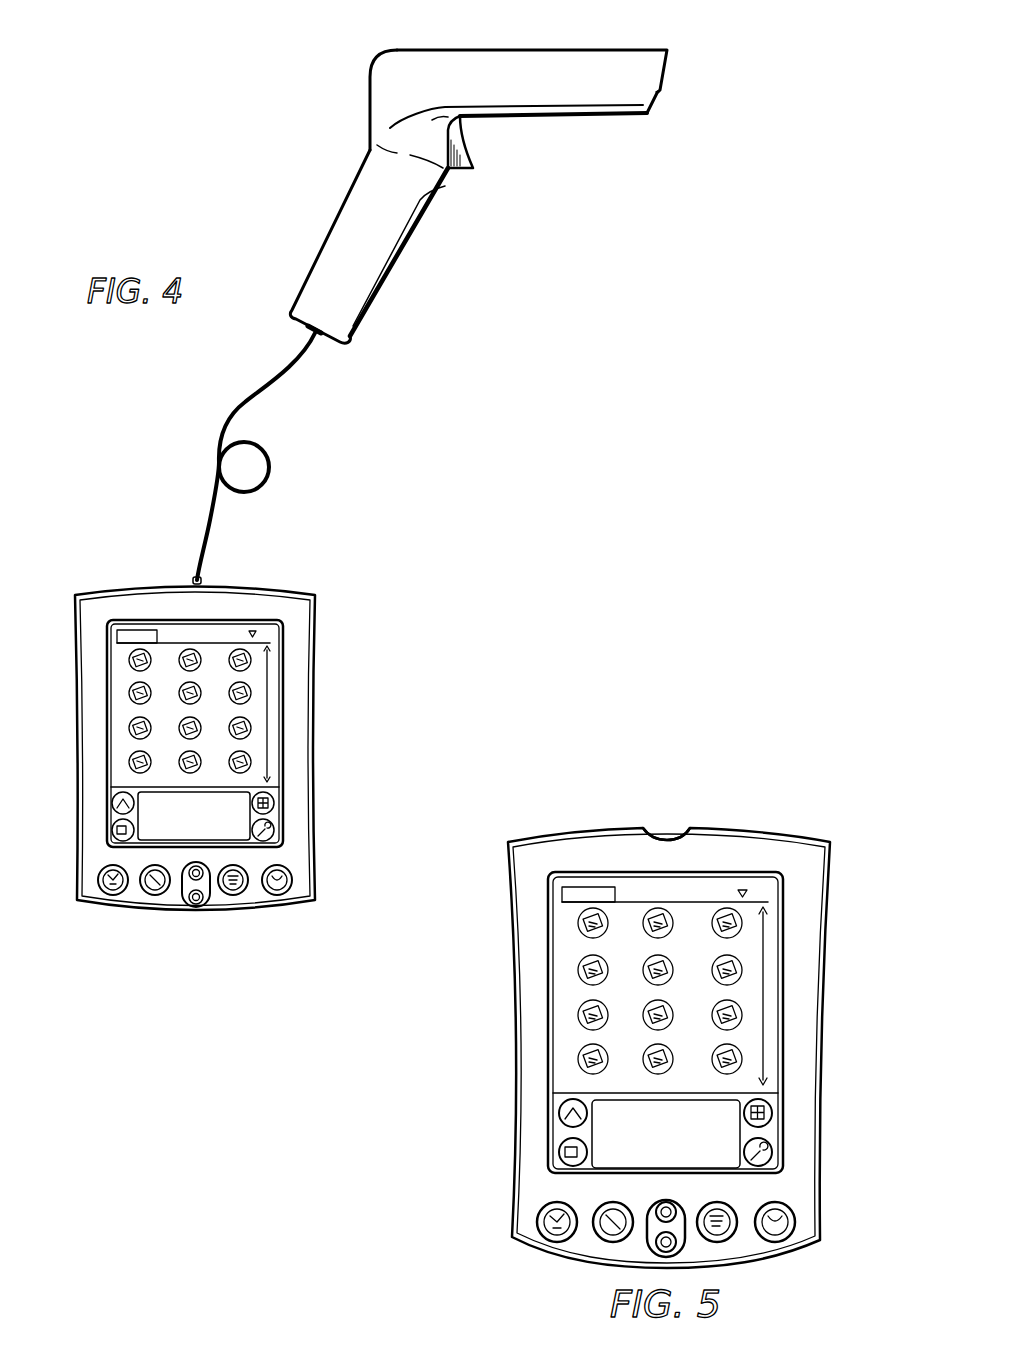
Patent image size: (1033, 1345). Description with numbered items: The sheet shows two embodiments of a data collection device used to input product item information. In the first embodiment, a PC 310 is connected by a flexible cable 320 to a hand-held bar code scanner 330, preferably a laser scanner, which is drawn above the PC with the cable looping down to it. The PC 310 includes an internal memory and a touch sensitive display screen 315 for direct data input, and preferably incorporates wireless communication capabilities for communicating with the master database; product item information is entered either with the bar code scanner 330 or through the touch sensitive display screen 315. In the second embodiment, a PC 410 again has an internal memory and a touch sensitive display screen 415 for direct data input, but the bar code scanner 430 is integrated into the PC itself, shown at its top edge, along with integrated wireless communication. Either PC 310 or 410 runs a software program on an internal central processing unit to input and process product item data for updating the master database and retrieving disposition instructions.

In FIG. 4, the hand-held bar code scanner 330 is at (370, 112).
In FIG. 4, the flexible cable 320 is at (212, 435).
In FIG. 4, the PC 310 is at (78, 755).
In FIG. 4, the touch sensitive display screen 315 is at (115, 743).
In FIG. 5, the PC 410 is at (823, 1173).
In FIG. 5, the touch sensitive display screen 415 is at (772, 1018).
In FIG. 5, the integrated bar code scanner 430 is at (668, 826).